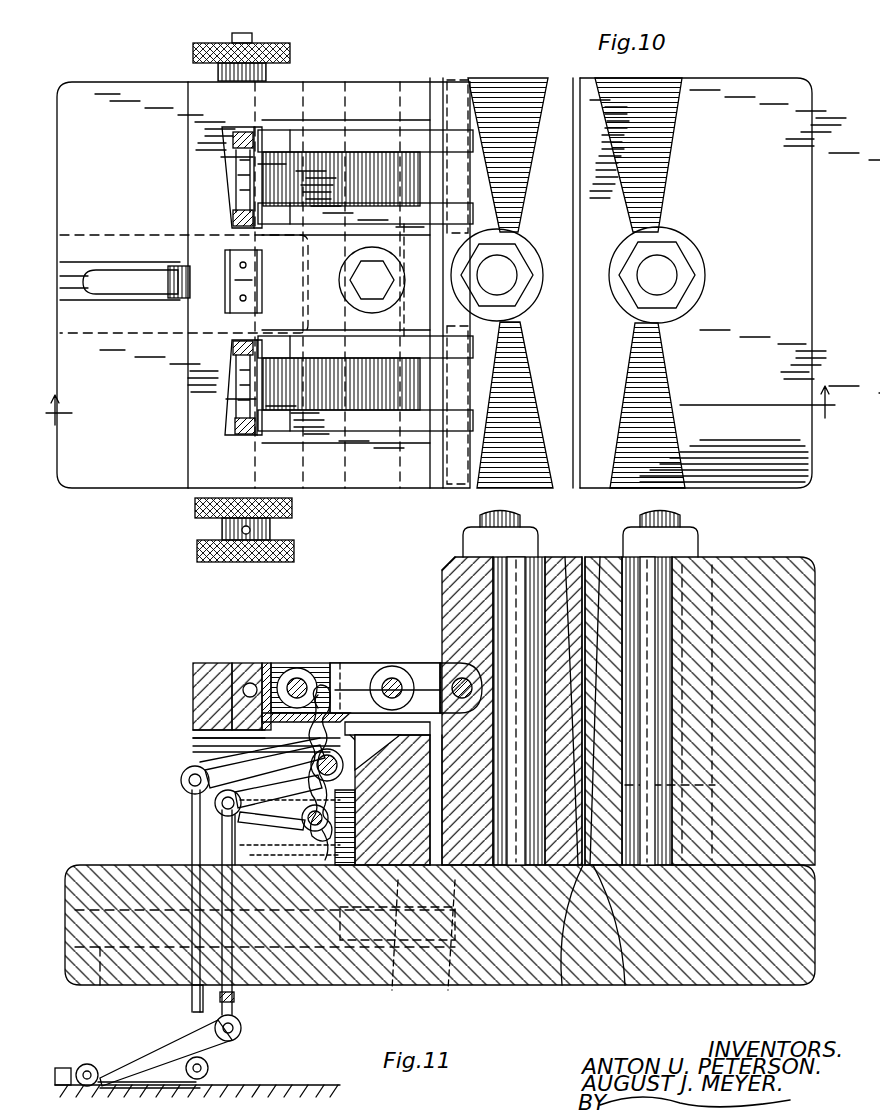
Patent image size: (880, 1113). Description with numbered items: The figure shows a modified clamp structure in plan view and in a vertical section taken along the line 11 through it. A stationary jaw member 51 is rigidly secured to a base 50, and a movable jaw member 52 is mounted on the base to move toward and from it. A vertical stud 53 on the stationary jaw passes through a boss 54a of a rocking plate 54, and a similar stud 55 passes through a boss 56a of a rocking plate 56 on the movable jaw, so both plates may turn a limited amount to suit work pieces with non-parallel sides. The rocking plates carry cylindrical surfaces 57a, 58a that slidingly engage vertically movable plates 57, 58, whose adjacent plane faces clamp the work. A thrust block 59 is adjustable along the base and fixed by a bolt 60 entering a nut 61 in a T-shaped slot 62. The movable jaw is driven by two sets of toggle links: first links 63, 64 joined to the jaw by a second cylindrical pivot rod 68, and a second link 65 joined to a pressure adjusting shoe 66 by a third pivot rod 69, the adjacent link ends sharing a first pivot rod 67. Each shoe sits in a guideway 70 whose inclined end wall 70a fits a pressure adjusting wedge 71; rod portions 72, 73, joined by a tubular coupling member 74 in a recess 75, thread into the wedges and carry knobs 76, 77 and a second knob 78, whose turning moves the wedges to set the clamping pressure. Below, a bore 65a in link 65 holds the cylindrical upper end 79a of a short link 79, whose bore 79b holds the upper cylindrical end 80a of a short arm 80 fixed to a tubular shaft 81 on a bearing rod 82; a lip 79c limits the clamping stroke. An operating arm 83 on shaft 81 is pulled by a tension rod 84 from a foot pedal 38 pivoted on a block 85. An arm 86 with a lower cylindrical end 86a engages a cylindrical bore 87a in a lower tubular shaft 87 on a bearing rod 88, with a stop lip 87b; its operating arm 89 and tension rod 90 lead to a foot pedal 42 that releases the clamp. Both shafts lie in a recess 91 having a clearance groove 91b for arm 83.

In FIG. 10, the section line 11 is at (441, 390).
In FIG. 11, the foot pedal 38 is at (175, 1084).
In FIG. 11, the foot pedal 42 is at (160, 1052).
In FIG. 10, the base 50 is at (125, 486).
In FIG. 11, the base 50 is at (497, 986).
In FIG. 10, the stationary jaw member 51 is at (770, 476).
In FIG. 11, the stationary jaw member 51 is at (770, 558).
In FIG. 10, the movable jaw member 52 is at (488, 470).
In FIG. 11, the movable jaw member 52 is at (446, 560).
In FIG. 10, the vertical stud 53 is at (668, 262).
In FIG. 11, the vertical stud 53 is at (682, 518).
In FIG. 10, the rocking plate 54 is at (622, 443).
In FIG. 11, the rocking plate 54 is at (622, 555).
In FIG. 10, the boss 54a is at (708, 282).
In FIG. 11, the boss 54a is at (702, 566).
In FIG. 10, the stud 55 is at (512, 262).
In FIG. 11, the stud 55 is at (493, 517).
In FIG. 10, the rocking plate 56 is at (547, 442).
In FIG. 11, the rocking plate 56 is at (562, 560).
In FIG. 10, the boss 56a is at (518, 232).
In FIG. 11, the boss 56a is at (440, 576).
In FIG. 11, the vertically movable plate 57 is at (600, 557).
In FIG. 11, the cylindrical surface 57a is at (625, 990).
In FIG. 11, the plate 58 is at (578, 560).
In FIG. 11, the cylindrical surface 58a is at (562, 990).
In FIG. 10, the thrust block 59 is at (190, 82).
In FIG. 11, the thrust block 59 is at (195, 690).
In FIG. 10, the bolt 60 is at (365, 270).
In FIG. 11, the bolt 60 is at (445, 986).
In FIG. 11, the nut 61 is at (392, 988).
In FIG. 10, the T-shaped slot 62 is at (97, 312).
In FIG. 11, the T-shaped slot 62 is at (312, 988).
In FIG. 10, the first link 63 is at (410, 133).
In FIG. 11, the first link 63 is at (420, 663).
In FIG. 10, the first link 64 is at (412, 222).
In FIG. 10, the second link 65 is at (368, 165).
In FIG. 11, the second link 65 is at (358, 663).
In FIG. 11, the cylindrical bore 65a is at (345, 662).
In FIG. 10, the pressure adjusting shoe 66 is at (263, 130).
In FIG. 11, the pressure adjusting shoe 66 is at (263, 662).
In FIG. 10, the first cylindrical pivot rod 67 is at (383, 82).
In FIG. 11, the first cylindrical pivot rod 67 is at (392, 684).
In FIG. 10, the second cylindrical pivot rod 68 is at (456, 92).
In FIG. 11, the second cylindrical pivot rod 68 is at (450, 680).
In FIG. 10, the third cylindrical pivot rod 69 is at (298, 96).
In FIG. 11, the third cylindrical pivot rod 69 is at (297, 676).
In FIG. 10, the guideway 70 is at (225, 137).
In FIG. 10, the left hand end wall 70a is at (222, 140).
In FIG. 11, the left hand end wall 70a is at (230, 705).
In FIG. 10, the pressure adjusting wedge 71 is at (233, 176).
In FIG. 11, the pressure adjusting wedge 71 is at (245, 662).
In FIG. 10, the rod portion 72 is at (232, 220).
In FIG. 10, the rod portion 73 is at (233, 346).
In FIG. 11, the rod portion 73 is at (233, 663).
In FIG. 10, the tubular coupling member 74 is at (258, 264).
In FIG. 10, the recess 75 is at (262, 300).
In FIG. 10, the knob 76 is at (205, 44).
In FIG. 10, the knob 77 is at (196, 513).
In FIG. 10, the second knob 78 is at (197, 553).
In FIG. 11, the link 79 is at (352, 716).
In FIG. 11, the cylindrical upper end 79a is at (322, 700).
In FIG. 11, the cylindrical bore 79b is at (318, 710).
In FIG. 11, the lip 79c is at (365, 751).
In FIG. 11, the short arm 80 is at (305, 750).
In FIG. 11, the upper cylindrical end 80a is at (365, 738).
In FIG. 11, the tubular shaft 81 is at (310, 790).
In FIG. 11, the bearing rod 82 is at (345, 767).
In FIG. 10, the operating arm 83 is at (172, 300).
In FIG. 11, the operating arm 83 is at (184, 790).
In FIG. 10, the tension rod 84 is at (150, 270).
In FIG. 11, the tension rod 84 is at (195, 835).
In FIG. 11, the block 85 is at (72, 1066).
In FIG. 11, the arm 86 is at (362, 790).
In FIG. 11, the lower cylindrical end 86a is at (348, 852).
In FIG. 11, the tubular shaft 87 is at (310, 862).
In FIG. 11, the cylindrical bore 87a is at (310, 848).
In FIG. 11, the stop lip 87b is at (318, 800).
In FIG. 11, the bearing rod 88 is at (302, 832).
In FIG. 11, the operating arm 89 is at (212, 828).
In FIG. 11, the tension rod 90 is at (222, 850).
In FIG. 11, the recess 91 is at (208, 766).
In FIG. 11, the clearance groove 91b is at (195, 742).